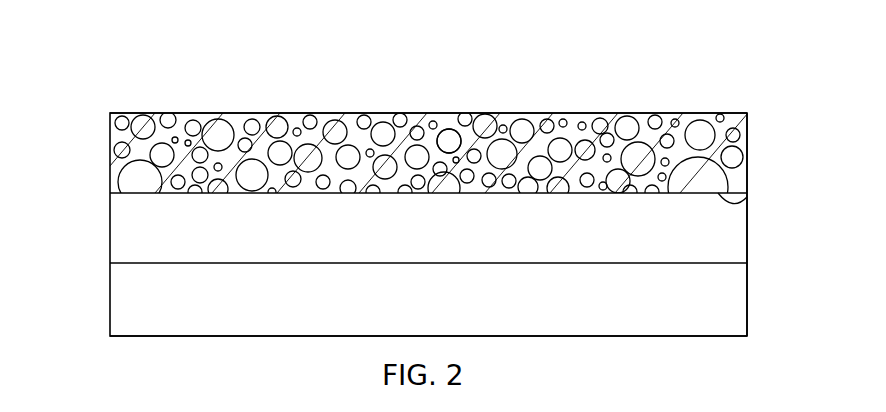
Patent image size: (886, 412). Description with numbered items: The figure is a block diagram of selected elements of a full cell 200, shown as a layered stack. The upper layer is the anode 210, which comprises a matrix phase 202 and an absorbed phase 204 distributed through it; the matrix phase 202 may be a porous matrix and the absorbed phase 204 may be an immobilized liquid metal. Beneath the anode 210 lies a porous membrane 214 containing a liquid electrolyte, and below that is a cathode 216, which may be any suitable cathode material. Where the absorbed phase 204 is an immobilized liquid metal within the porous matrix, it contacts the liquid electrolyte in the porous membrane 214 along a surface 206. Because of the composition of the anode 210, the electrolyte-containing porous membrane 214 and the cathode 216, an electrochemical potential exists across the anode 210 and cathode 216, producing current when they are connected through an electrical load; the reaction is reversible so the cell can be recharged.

The full cell 200 is at (572, 82).
The matrix phase 202 is at (242, 118).
The absorbed phase 204 is at (450, 117).
The surface 206 is at (748, 203).
The anode 210 is at (92, 113).
The porous membrane 214 is at (445, 242).
The cathode 216 is at (445, 314).